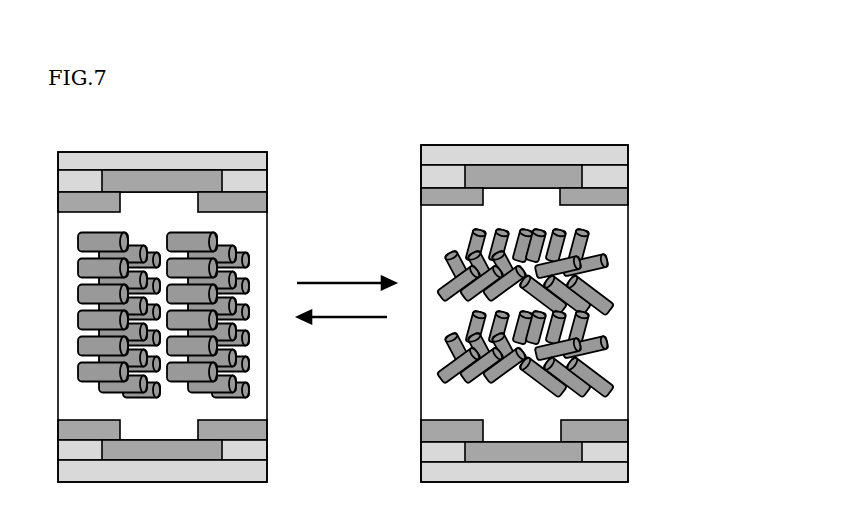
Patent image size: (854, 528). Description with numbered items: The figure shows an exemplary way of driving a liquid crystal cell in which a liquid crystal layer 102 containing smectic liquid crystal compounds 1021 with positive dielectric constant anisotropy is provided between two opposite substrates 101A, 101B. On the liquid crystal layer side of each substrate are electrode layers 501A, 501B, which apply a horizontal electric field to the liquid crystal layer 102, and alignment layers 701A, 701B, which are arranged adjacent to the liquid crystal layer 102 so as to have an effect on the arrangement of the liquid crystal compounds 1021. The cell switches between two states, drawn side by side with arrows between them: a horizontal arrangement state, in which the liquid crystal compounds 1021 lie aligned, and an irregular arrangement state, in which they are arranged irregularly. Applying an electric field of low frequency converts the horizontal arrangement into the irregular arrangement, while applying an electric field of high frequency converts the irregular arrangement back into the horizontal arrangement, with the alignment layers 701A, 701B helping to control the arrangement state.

The substrate 101A is at (607, 157).
The electrode layer 501A is at (605, 175).
The alignment layer 701A is at (613, 195).
The liquid crystal layer 102 is at (611, 312).
The smectic liquid crystal compound 1021 is at (613, 315).
The alignment layer 701B is at (610, 431).
The electrode layer 501B is at (615, 450).
The substrate 101B is at (615, 468).